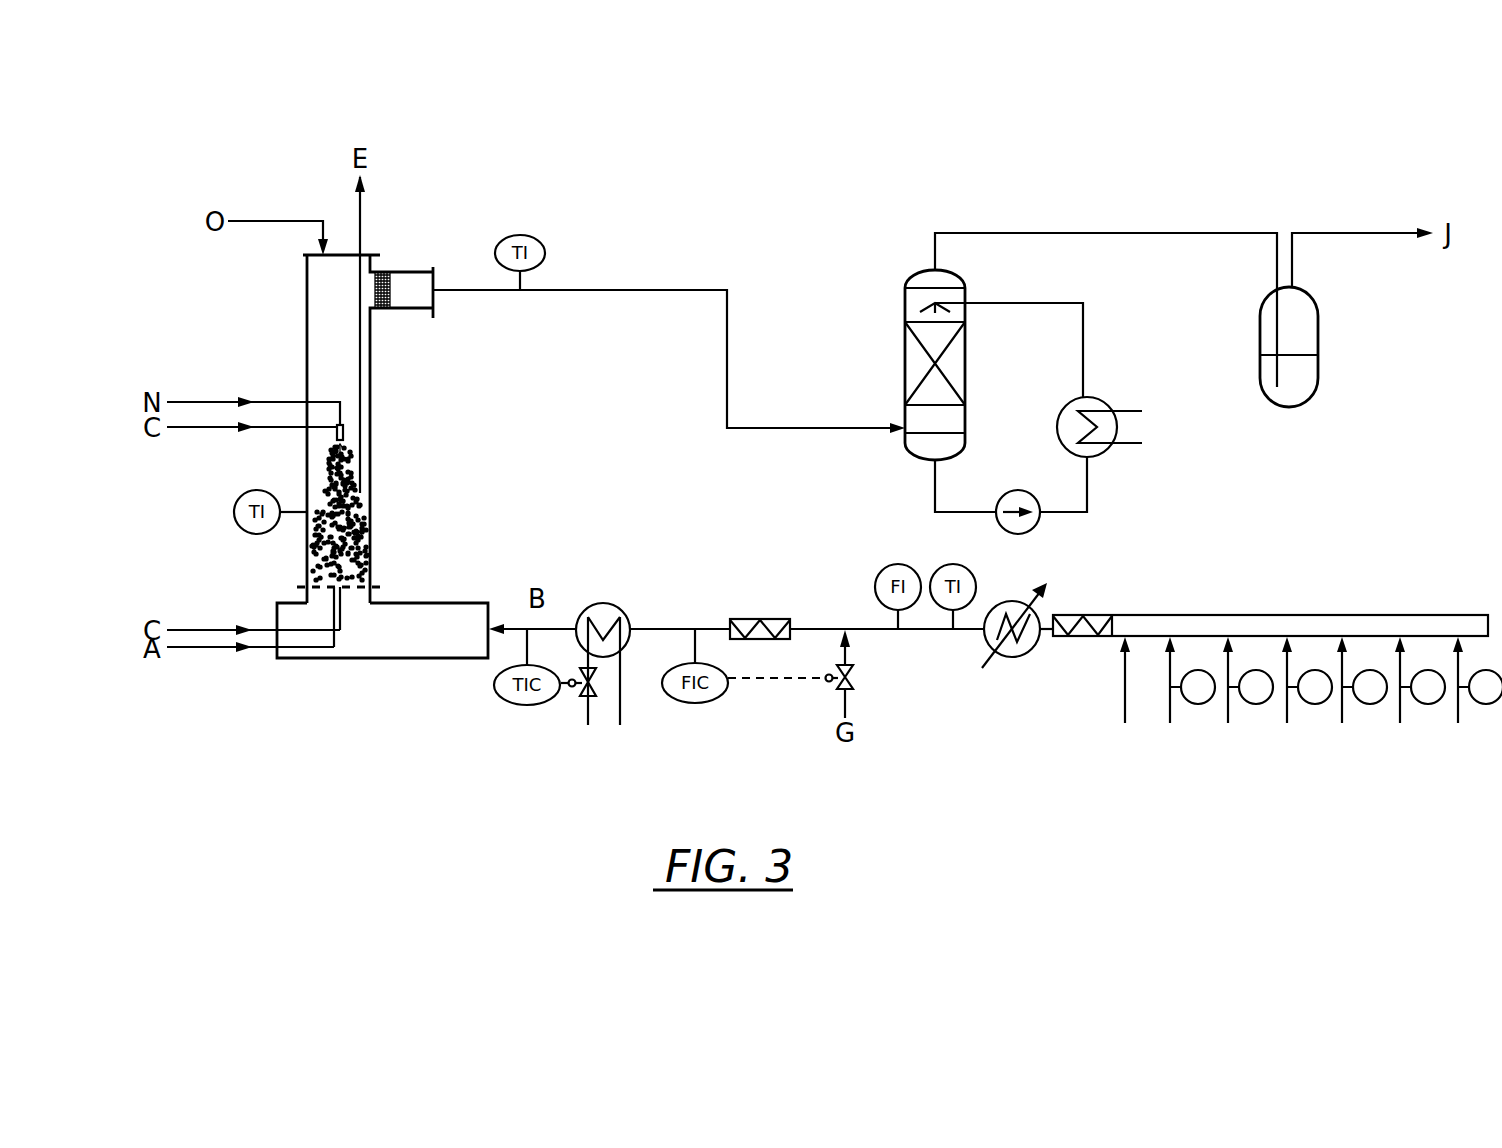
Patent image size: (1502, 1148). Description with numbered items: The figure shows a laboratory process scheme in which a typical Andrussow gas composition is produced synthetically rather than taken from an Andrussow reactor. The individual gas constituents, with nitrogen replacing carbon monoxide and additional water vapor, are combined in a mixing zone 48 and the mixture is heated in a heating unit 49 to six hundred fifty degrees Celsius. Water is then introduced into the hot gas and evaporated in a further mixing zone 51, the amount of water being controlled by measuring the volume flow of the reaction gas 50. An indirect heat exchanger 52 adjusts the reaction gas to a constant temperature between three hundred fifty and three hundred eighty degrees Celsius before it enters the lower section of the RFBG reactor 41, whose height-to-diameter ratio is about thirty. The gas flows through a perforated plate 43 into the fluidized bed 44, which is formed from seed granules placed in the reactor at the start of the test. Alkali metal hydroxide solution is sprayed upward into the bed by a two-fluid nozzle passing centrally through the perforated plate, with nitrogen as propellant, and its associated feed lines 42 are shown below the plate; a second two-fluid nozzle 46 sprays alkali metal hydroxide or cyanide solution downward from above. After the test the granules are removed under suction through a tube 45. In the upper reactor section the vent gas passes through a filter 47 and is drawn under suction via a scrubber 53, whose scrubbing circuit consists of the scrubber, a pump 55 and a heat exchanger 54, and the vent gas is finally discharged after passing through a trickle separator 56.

The RFBG reactor 41 is at (307, 331).
The feed tubes 42 is at (352, 578).
The perforated plate 43 is at (378, 587).
The fluidized bed 44 is at (371, 497).
The tube 45 is at (361, 384).
The two-fluid nozzle 46 is at (343, 432).
The filter 47 is at (390, 272).
The mixing zone 48 is at (1262, 614).
The heating unit 49 is at (1013, 657).
The volume flow measurement of the reaction gas 50 is at (855, 683).
The mixing zone 51 is at (762, 617).
The indirect heat exchanger 52 is at (608, 603).
The scrubber 53 is at (905, 352).
The heat exchanger 54 is at (1100, 452).
The pump 55 is at (1036, 530).
The trickle separator 56 is at (1318, 350).